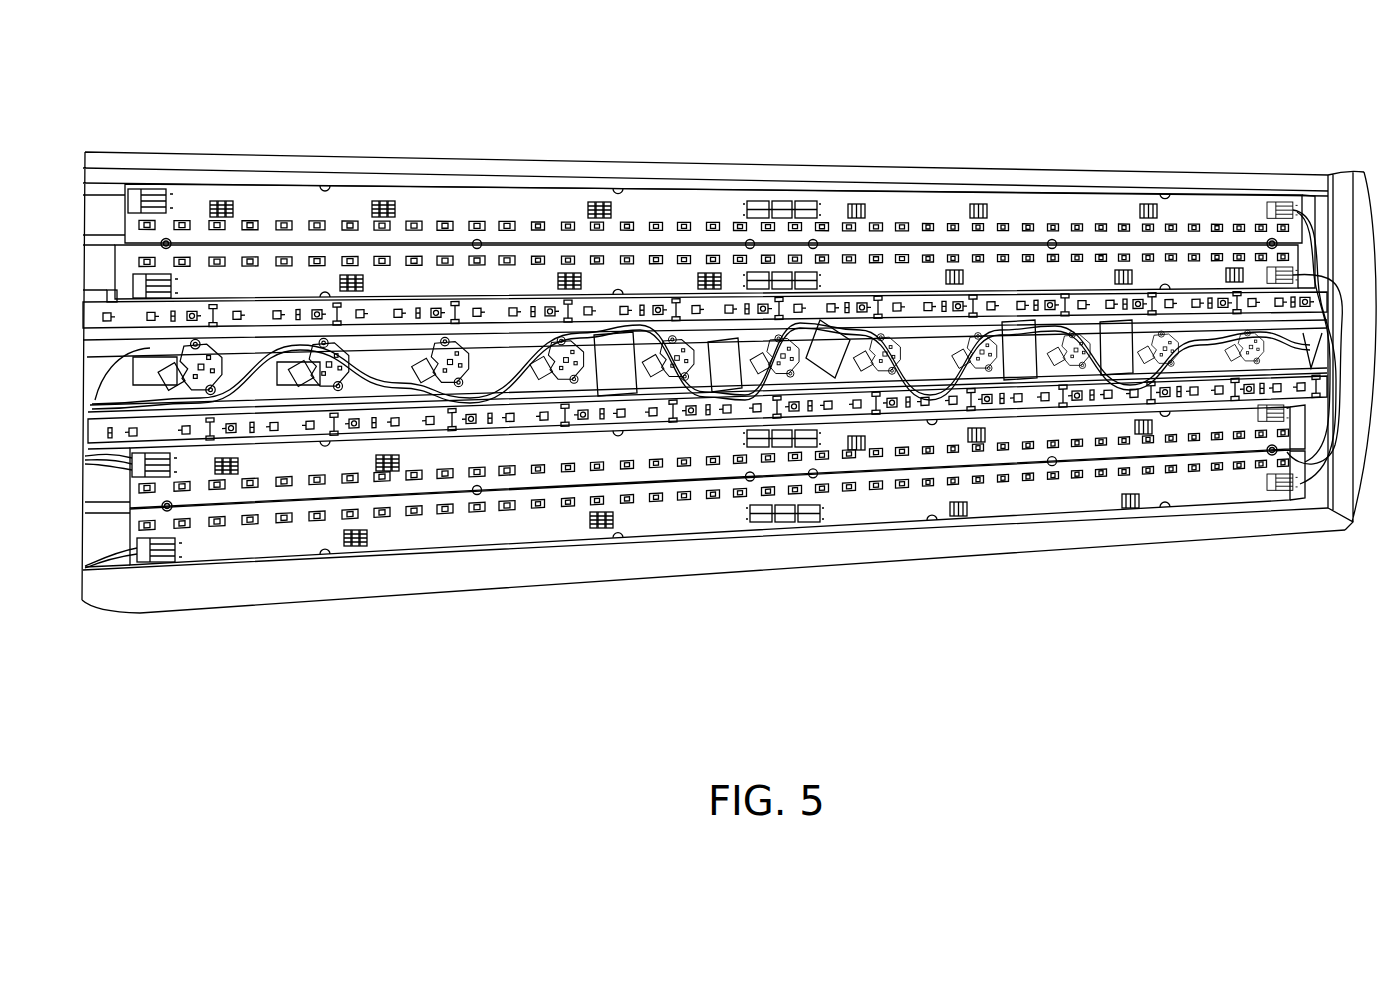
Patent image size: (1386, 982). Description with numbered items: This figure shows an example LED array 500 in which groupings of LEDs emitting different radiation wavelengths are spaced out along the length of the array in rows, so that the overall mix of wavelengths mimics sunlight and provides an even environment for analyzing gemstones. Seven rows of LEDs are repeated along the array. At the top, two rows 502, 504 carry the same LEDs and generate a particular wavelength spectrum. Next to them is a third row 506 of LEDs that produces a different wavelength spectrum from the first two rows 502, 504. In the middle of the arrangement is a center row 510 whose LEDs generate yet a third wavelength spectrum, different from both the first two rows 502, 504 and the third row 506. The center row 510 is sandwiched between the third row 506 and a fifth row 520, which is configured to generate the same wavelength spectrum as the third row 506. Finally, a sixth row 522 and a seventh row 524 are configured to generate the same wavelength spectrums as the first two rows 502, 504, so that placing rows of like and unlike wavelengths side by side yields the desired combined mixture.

The LED array 500 is at (1372, 130).
The first row of LEDs 502 is at (80, 221).
The second row of LEDs 504 is at (80, 260).
The third row of LEDs 506 is at (80, 302).
The center row of LEDs 510 is at (80, 352).
The fifth row of LEDs 520 is at (80, 421).
The sixth row of LEDs 522 is at (80, 475).
The seventh row of LEDs 524 is at (80, 521).